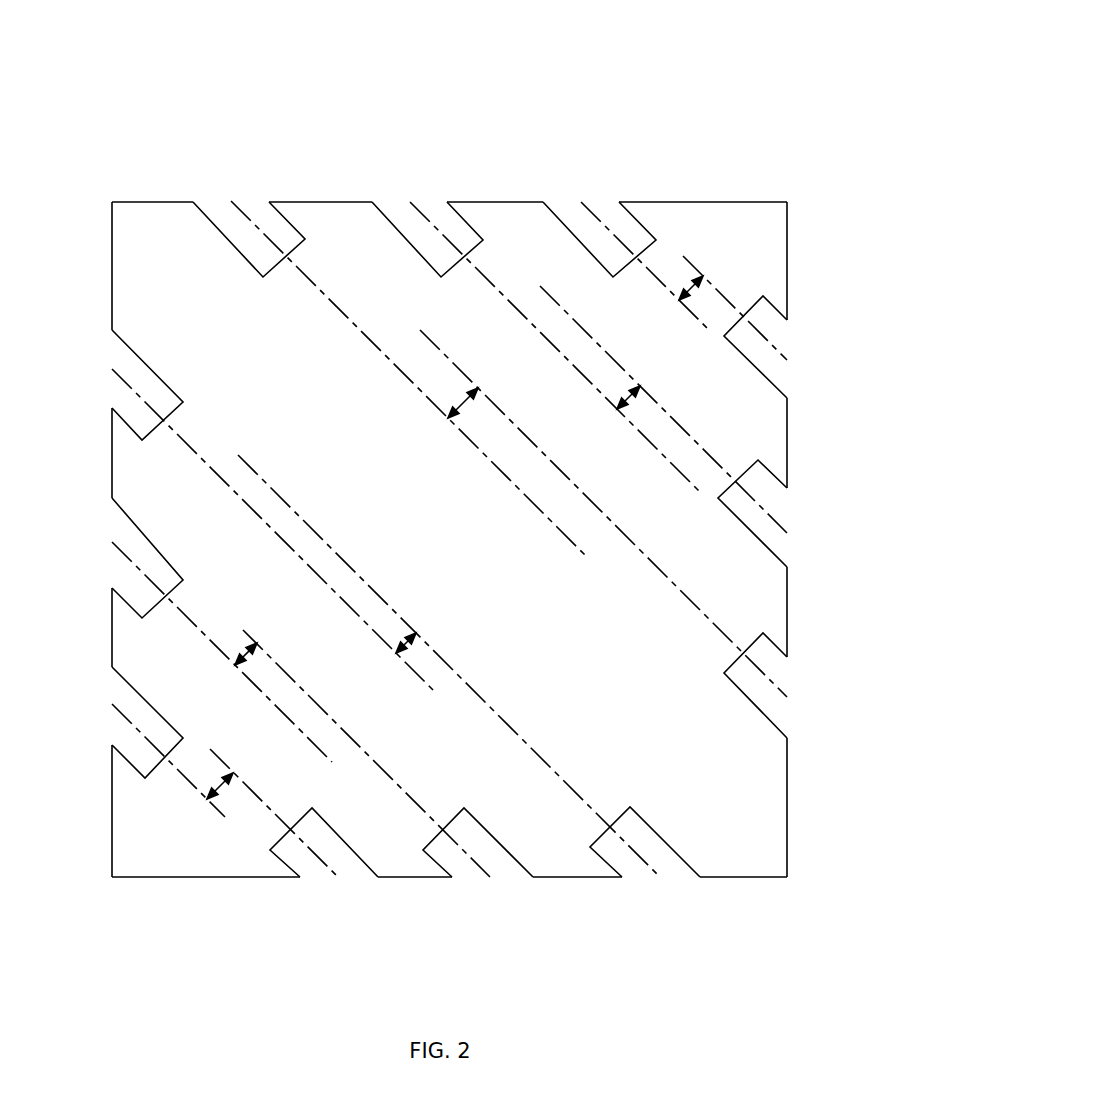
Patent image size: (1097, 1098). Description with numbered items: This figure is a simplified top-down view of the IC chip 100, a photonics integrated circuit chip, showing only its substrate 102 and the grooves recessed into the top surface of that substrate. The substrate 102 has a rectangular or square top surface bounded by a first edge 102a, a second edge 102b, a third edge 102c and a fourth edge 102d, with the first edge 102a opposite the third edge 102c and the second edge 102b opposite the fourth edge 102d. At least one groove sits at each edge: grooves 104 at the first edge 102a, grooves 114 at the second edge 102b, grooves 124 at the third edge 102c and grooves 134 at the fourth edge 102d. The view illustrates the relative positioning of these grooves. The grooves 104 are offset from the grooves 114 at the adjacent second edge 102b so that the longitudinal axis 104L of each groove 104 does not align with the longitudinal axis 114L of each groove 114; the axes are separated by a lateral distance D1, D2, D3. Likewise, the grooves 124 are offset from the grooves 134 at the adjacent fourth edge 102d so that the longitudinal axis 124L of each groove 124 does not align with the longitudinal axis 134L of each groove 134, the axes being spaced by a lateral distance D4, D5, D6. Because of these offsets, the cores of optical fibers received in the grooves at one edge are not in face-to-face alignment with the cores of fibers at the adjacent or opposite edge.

The IC chip 100 is at (460, 492).
The substrate 102 is at (460, 537).
The first edge 102a is at (342, 200).
The second edge 102b is at (792, 420).
The third edge 102c is at (558, 880).
The fourth edge 102d is at (108, 637).
The grooves 104 is at (222, 222).
The longitudinal axis 104L is at (677, 294).
The grooves 114 is at (778, 327).
The longitudinal axis 114L is at (733, 298).
The grooves 124 is at (300, 860).
The longitudinal axis 124L is at (297, 680).
The grooves 134 is at (123, 400).
The longitudinal axis 134L is at (203, 633).
The lateral distance D1 is at (680, 291).
The lateral distance D2 is at (628, 398).
The lateral distance D3 is at (458, 405).
The lateral distance D4 is at (399, 648).
The lateral distance D5 is at (239, 661).
The lateral distance D6 is at (210, 795).